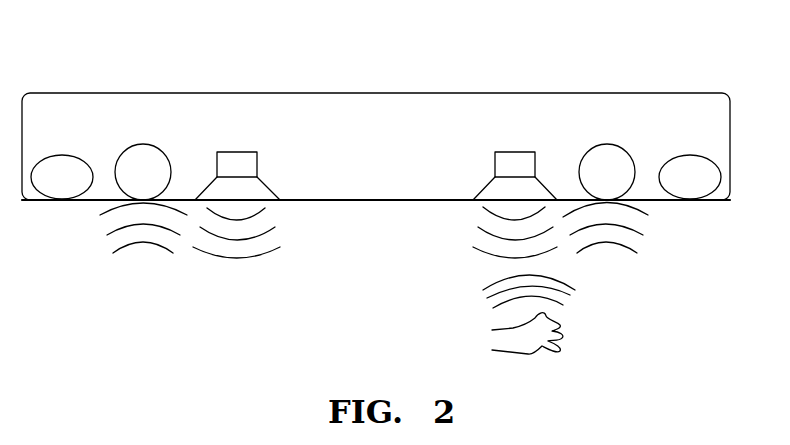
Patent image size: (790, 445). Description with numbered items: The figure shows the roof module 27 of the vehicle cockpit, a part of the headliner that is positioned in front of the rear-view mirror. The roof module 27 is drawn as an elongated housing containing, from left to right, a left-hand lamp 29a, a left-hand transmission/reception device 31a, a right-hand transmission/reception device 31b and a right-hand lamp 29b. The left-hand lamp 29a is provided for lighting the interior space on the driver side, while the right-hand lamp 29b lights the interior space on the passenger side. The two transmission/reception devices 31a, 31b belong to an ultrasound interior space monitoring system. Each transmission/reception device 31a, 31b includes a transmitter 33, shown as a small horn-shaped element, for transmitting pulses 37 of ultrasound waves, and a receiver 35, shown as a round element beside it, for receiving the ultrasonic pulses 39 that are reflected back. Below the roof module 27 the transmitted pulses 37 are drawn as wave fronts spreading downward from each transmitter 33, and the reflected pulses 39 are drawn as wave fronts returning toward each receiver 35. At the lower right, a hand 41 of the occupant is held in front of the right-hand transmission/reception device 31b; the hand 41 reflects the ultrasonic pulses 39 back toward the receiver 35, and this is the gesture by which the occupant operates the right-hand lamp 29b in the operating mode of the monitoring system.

The roof module 27 is at (730, 118).
The left-hand lamp 29a is at (65, 155).
The right-hand lamp 29b is at (688, 155).
The left-hand transmission/reception device 31a is at (192, 166).
The right-hand transmission/reception device 31b is at (559, 166).
The transmitter 33 is at (250, 152).
The receiver 35 is at (143, 144).
The pulses of ultrasound waves 37 is at (286, 241).
The reflected ultrasonic pulses 39 is at (95, 240).
The hand 41 is at (538, 342).